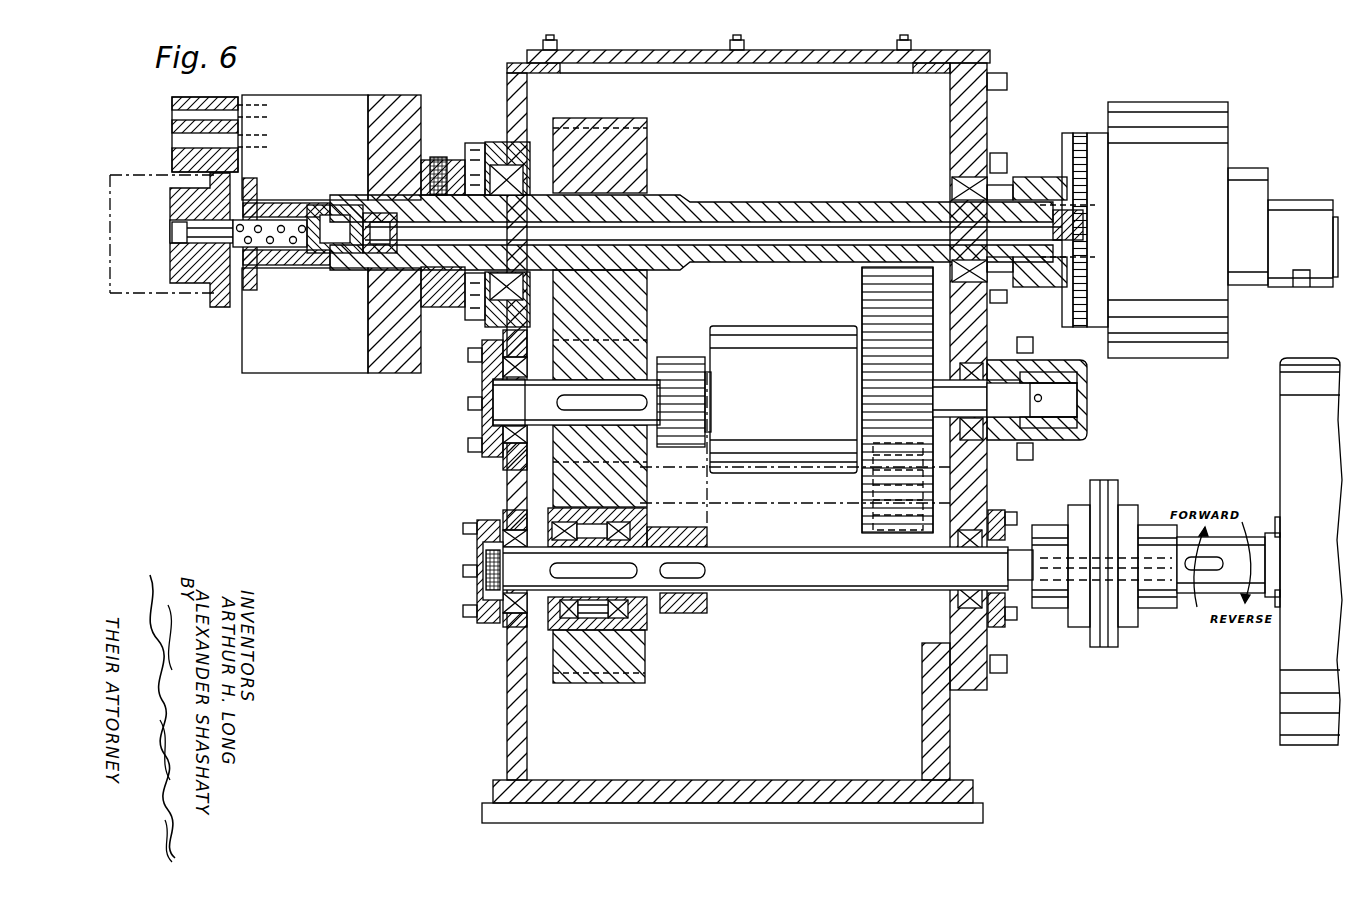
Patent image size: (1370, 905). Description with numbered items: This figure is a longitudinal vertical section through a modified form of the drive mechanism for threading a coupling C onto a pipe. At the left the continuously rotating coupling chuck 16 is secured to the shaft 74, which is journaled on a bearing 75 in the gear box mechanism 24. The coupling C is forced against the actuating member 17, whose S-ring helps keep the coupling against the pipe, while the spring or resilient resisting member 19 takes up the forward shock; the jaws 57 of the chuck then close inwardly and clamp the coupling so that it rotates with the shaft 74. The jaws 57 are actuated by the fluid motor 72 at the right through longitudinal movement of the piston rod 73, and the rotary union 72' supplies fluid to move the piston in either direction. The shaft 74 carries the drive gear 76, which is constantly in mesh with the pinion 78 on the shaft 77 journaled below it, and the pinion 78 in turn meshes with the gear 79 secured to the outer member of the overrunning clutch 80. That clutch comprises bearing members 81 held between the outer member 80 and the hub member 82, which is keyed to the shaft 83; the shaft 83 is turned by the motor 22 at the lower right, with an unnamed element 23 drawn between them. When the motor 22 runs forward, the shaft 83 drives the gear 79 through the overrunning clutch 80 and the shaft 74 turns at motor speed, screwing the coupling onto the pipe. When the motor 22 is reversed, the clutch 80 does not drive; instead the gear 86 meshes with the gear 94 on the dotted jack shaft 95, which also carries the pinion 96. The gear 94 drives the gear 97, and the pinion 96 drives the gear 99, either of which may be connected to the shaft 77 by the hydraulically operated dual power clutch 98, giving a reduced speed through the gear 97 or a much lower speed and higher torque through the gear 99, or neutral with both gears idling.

The coupling chuck 16 is at (326, 118).
The actuating member 17 is at (190, 262).
The spring or resilient resisting member 19 is at (300, 266).
The motor 22 is at (1298, 443).
The coupling 23 is at (1113, 505).
The gear box mechanism 24 is at (508, 662).
The jaws 57 is at (178, 160).
The fluid motor 72 is at (1154, 215).
The rotary union 72' is at (1303, 223).
The piston rod 73 is at (700, 232).
The shaft 74 is at (752, 206).
The bearing 75 is at (492, 160).
The drive gear 76 is at (586, 135).
The shaft 77 is at (508, 403).
The pinion 78 is at (633, 362).
The gear 79 is at (575, 682).
The overrunning clutch 80 is at (623, 623).
The bearing members 81 is at (550, 525).
The hub member 82 is at (593, 597).
The shaft 83 is at (515, 568).
The gear 86 is at (700, 607).
The gear 94 is at (695, 515).
The jack shaft 95 is at (775, 506).
The pinion 96 is at (875, 524).
The gear 97 is at (690, 390).
The hydraulically operated dual power clutch 98 is at (780, 340).
The gear 99 is at (818, 192).
The coupling C is at (122, 300).